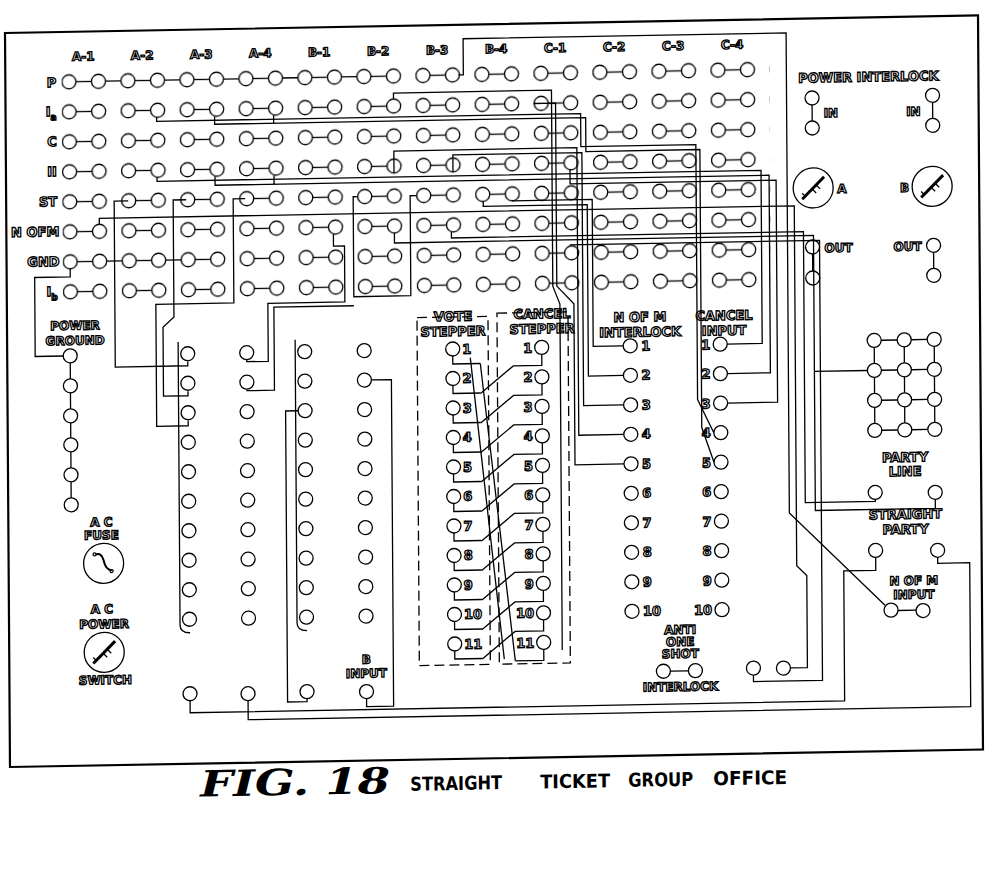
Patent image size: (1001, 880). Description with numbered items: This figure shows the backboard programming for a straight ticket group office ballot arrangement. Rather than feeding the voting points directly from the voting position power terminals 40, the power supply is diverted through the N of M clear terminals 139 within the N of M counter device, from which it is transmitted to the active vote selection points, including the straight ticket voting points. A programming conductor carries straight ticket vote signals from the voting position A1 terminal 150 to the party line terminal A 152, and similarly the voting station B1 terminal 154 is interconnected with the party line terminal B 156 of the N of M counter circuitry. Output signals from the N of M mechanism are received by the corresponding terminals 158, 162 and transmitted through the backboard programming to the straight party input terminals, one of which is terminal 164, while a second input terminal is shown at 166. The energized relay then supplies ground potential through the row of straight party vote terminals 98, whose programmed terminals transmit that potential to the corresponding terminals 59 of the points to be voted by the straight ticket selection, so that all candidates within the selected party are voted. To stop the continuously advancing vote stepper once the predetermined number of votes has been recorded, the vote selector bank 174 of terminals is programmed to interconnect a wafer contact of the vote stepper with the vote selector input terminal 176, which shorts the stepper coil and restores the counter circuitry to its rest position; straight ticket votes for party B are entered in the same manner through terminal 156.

The voting position A1 terminal 150 is at (99, 226).
The voting station B1 terminal 154 is at (330, 217).
The terminals 59 is at (131, 209).
The straight party vote terminals 98 is at (170, 488).
The vote selector bank of terminals 174 is at (287, 488).
The voting position multiple interconnected power terminals 40 is at (946, 350).
The party line terminal A 152 is at (870, 500).
The party line terminal B 156 is at (933, 501).
The N of M output terminal 158 is at (869, 559).
The N of M output terminal 162 is at (936, 560).
The A input terminal 166 is at (192, 700).
The straight party input terminal 164 is at (249, 703).
The vote selector input terminal 176 is at (309, 702).
The N of M clear terminals 139 is at (756, 688).